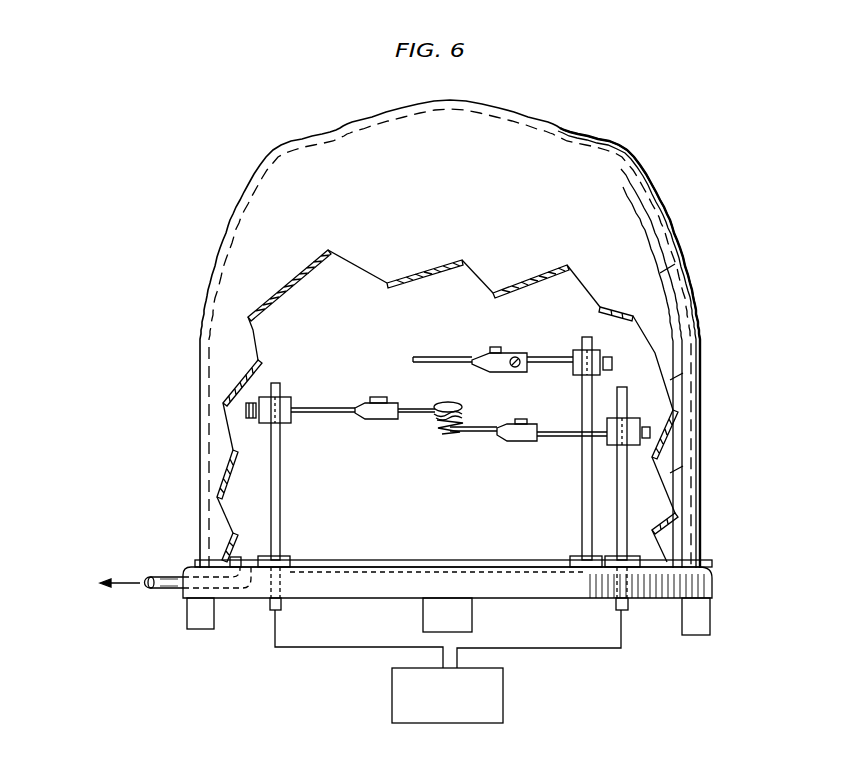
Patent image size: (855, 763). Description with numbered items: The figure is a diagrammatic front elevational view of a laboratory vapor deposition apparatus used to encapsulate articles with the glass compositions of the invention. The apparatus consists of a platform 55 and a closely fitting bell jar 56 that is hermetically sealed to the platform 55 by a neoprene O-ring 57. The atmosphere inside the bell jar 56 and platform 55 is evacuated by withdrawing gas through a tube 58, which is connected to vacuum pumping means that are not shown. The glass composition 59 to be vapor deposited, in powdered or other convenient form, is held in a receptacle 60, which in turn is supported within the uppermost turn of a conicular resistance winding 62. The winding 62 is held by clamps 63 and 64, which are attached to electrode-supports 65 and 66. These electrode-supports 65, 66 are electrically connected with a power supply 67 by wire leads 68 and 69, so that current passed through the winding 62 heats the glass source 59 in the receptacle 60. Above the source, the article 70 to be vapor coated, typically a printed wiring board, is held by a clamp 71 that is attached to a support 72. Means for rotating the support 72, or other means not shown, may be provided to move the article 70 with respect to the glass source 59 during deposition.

The platform 55 is at (712, 591).
The bell jar 56 is at (690, 279).
The neoprene O-ring 57 is at (712, 564).
The tube 58 is at (166, 590).
The glass composition 59 is at (456, 403).
The receptacle 60 is at (470, 413).
The conicular resistance winding 62 is at (448, 431).
The clamp 63 is at (368, 404).
The clamp 64 is at (540, 425).
The electrode-support 65 is at (282, 501).
The electrode-support 66 is at (626, 499).
The power supply 67 is at (446, 723).
The wire lead 68 is at (310, 647).
The wire lead 69 is at (548, 648).
The article 70 is at (426, 357).
The clamp 71 is at (513, 354).
The support 72 is at (582, 516).